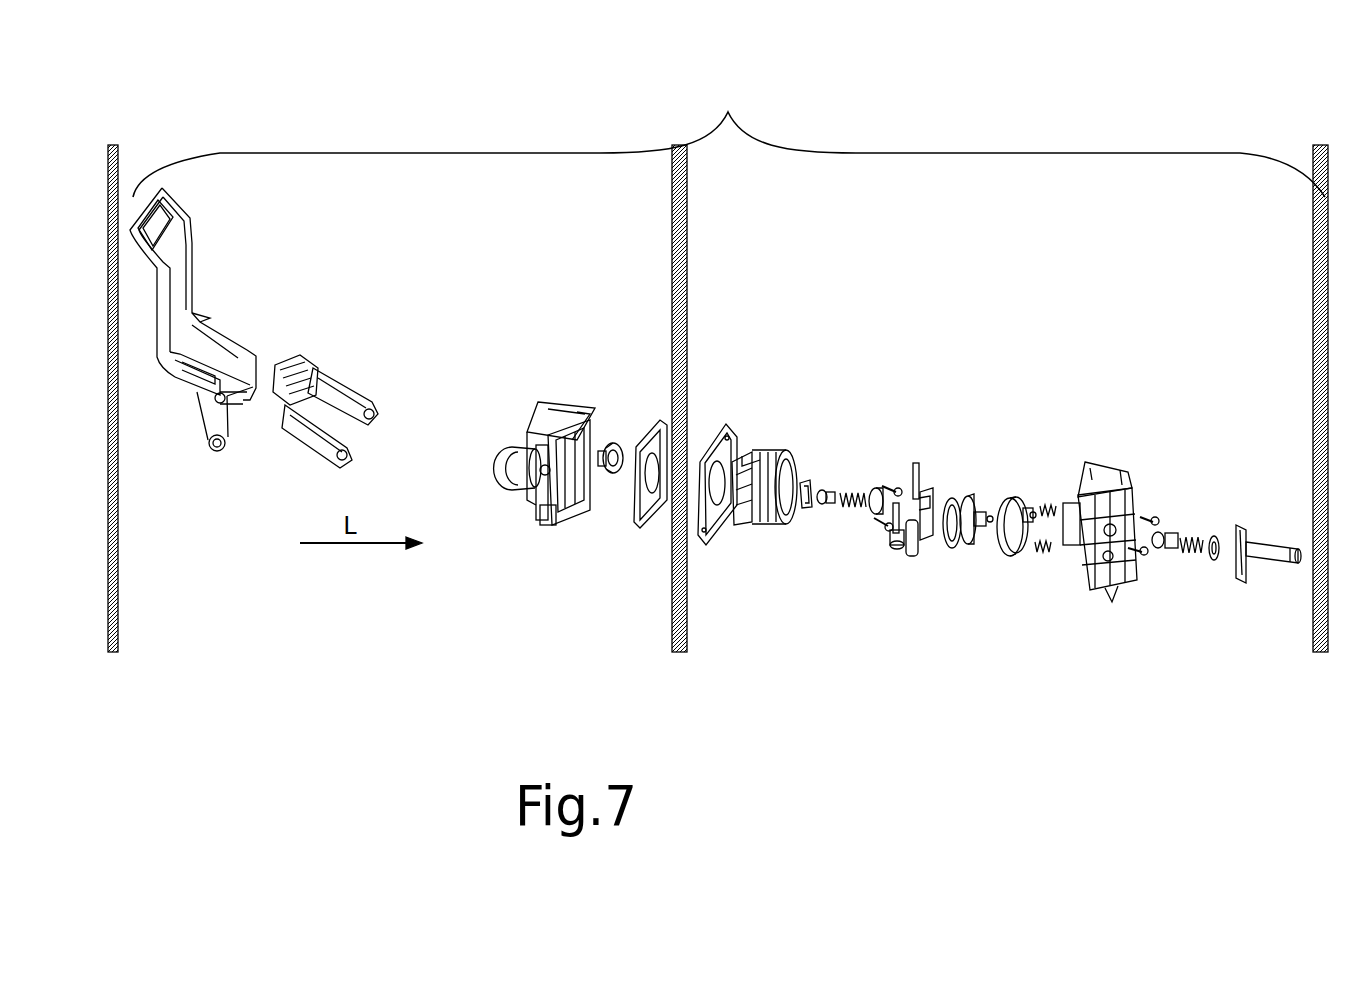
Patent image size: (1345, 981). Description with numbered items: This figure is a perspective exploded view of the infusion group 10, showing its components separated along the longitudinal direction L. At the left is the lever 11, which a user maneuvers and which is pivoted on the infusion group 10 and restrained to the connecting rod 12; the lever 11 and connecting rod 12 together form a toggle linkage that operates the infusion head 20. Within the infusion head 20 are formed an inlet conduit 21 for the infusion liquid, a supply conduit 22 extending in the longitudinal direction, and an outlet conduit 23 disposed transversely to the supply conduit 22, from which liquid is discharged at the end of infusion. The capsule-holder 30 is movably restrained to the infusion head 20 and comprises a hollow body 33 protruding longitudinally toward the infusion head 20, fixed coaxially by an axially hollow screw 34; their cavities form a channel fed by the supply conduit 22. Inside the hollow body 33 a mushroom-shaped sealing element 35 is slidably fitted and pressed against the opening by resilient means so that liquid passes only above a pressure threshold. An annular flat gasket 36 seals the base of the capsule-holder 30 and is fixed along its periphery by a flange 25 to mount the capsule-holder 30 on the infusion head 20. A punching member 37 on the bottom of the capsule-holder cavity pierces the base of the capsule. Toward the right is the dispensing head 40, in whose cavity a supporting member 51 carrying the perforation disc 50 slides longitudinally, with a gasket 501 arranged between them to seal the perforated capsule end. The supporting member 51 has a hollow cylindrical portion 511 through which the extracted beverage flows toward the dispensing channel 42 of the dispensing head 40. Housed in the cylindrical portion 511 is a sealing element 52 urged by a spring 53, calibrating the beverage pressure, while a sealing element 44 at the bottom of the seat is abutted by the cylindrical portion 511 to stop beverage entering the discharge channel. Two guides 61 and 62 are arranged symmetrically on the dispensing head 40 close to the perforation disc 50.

The infusion group 10 is at (722, 88).
The lever 11 is at (188, 268).
The connecting rod 12 is at (340, 386).
The infusion head 20 is at (550, 460).
The inlet conduit 21 is at (507, 527).
The supply conduit 22 is at (530, 453).
The outlet conduit 23 is at (543, 513).
The flange 25 is at (733, 458).
The capsule-holder 30 is at (785, 460).
The hollow body 33 is at (612, 453).
The axially hollow screw 34 is at (875, 522).
The sealing element 35 is at (825, 497).
The gasket 36 is at (665, 430).
The punching member 37 is at (805, 487).
The dispensing head 40 is at (1115, 470).
The dispensing channel 42 is at (1263, 550).
The sealing element 44 is at (1212, 558).
The perforation disc 50 is at (977, 503).
The supporting member 51 is at (1008, 552).
The sealing element 52 is at (1163, 537).
The spring 53 is at (1205, 537).
The guide 61 is at (925, 500).
The guide 62 is at (903, 550).
The gasket 501 is at (947, 547).
The hollow cylindrical portion 511 is at (1027, 545).